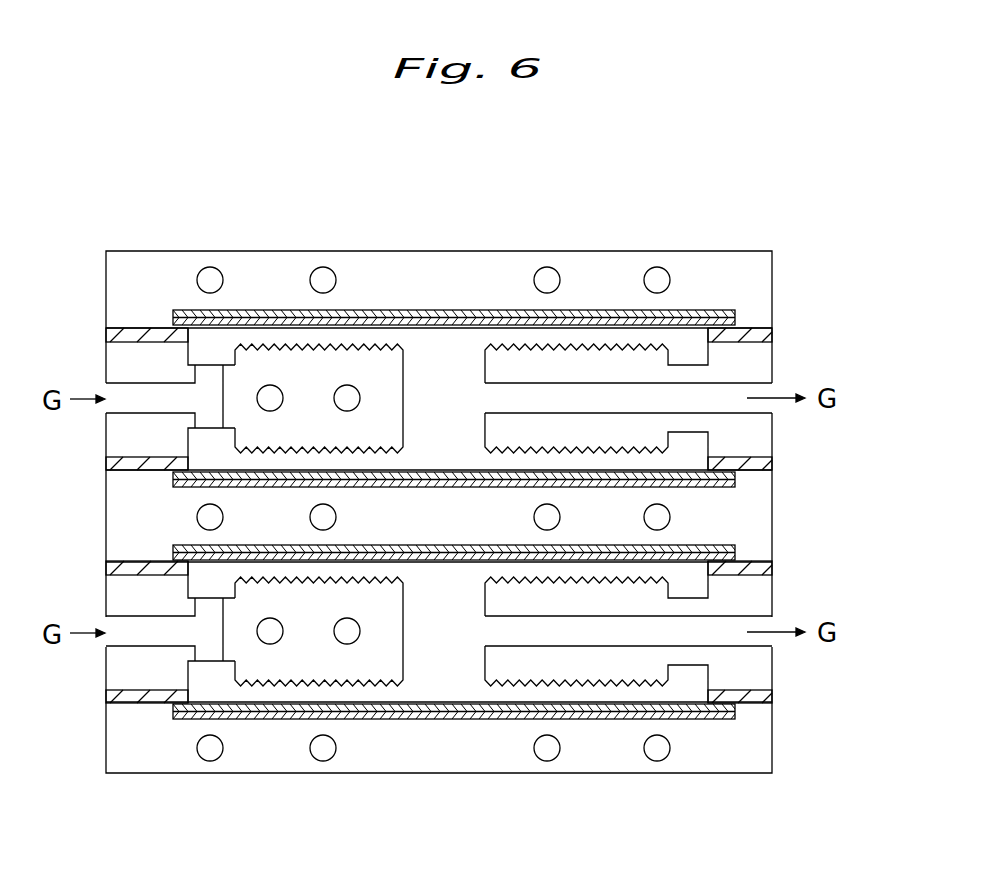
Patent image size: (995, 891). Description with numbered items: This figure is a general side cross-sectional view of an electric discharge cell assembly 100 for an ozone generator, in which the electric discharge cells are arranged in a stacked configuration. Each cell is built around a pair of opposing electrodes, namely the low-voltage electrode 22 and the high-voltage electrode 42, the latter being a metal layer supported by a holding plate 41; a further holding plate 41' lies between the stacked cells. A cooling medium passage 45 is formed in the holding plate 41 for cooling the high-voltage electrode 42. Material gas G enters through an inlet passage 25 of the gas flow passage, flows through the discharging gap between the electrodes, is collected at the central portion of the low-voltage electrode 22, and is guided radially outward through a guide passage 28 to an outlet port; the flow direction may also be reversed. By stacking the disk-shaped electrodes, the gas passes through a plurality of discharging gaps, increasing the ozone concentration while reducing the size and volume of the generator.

The electric discharge cell assembly 100 is at (252, 232).
The low-voltage electrode 22 is at (324, 383).
The inlet passage 25 is at (153, 395).
The guide passage 28 is at (717, 393).
The holding plate 41 is at (439, 510).
The intermediate plate 41' is at (484, 516).
The high-voltage electrode 42 is at (446, 310).
The cooling medium passage 45 is at (545, 275).